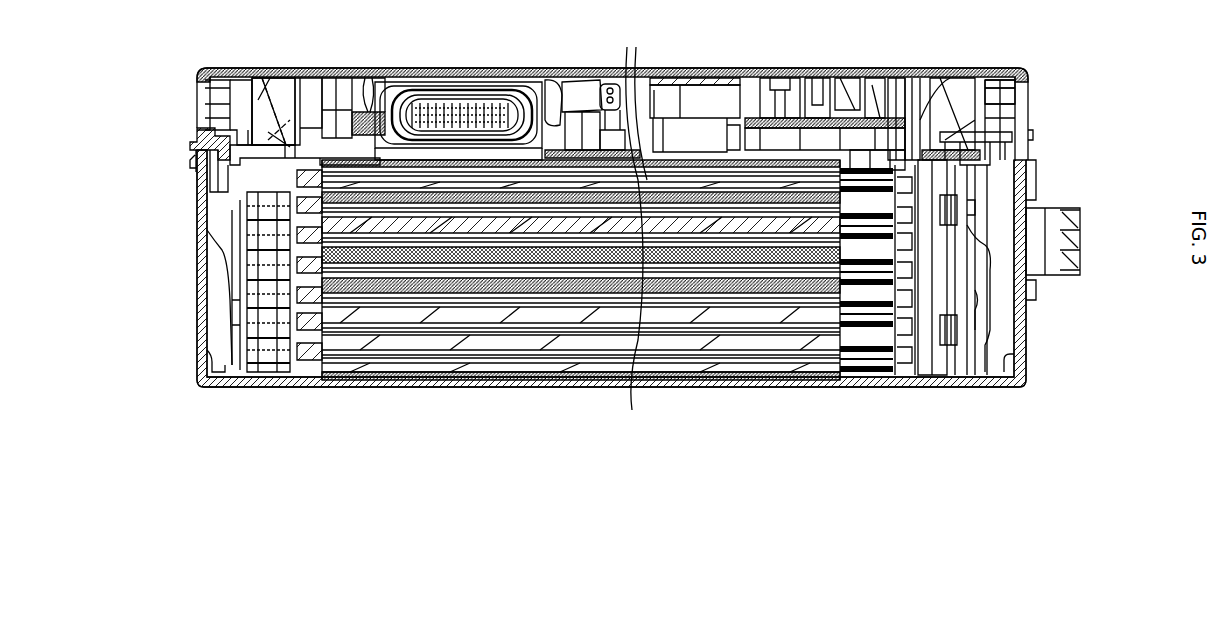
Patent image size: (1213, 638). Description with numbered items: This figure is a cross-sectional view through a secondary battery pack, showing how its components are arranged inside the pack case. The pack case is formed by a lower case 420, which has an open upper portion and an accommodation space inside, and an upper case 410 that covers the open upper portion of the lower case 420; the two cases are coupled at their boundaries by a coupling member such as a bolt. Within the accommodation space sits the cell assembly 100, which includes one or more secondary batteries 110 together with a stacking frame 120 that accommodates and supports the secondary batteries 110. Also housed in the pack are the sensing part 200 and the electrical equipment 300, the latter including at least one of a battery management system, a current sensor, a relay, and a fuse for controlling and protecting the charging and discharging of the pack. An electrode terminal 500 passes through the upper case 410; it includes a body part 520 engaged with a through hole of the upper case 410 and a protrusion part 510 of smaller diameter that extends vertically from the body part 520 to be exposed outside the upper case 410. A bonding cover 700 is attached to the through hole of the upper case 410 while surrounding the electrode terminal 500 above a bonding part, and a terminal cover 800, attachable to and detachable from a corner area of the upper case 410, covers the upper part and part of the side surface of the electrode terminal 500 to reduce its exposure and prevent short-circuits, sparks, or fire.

The cell assembly 100 is at (581, 319).
The secondary battery 110 is at (463, 313).
The stacking frame 120 is at (268, 313).
The sensing part 200 is at (950, 275).
The electrical equipment 300 is at (707, 106).
The upper case 410 is at (205, 140).
The lower case 420 is at (197, 296).
The electrode terminal 500 is at (248, 102).
The protrusion part 510 is at (998, 93).
The body part 520 is at (1000, 148).
The bonding cover 700 is at (900, 80).
The terminal cover 800 is at (288, 68).